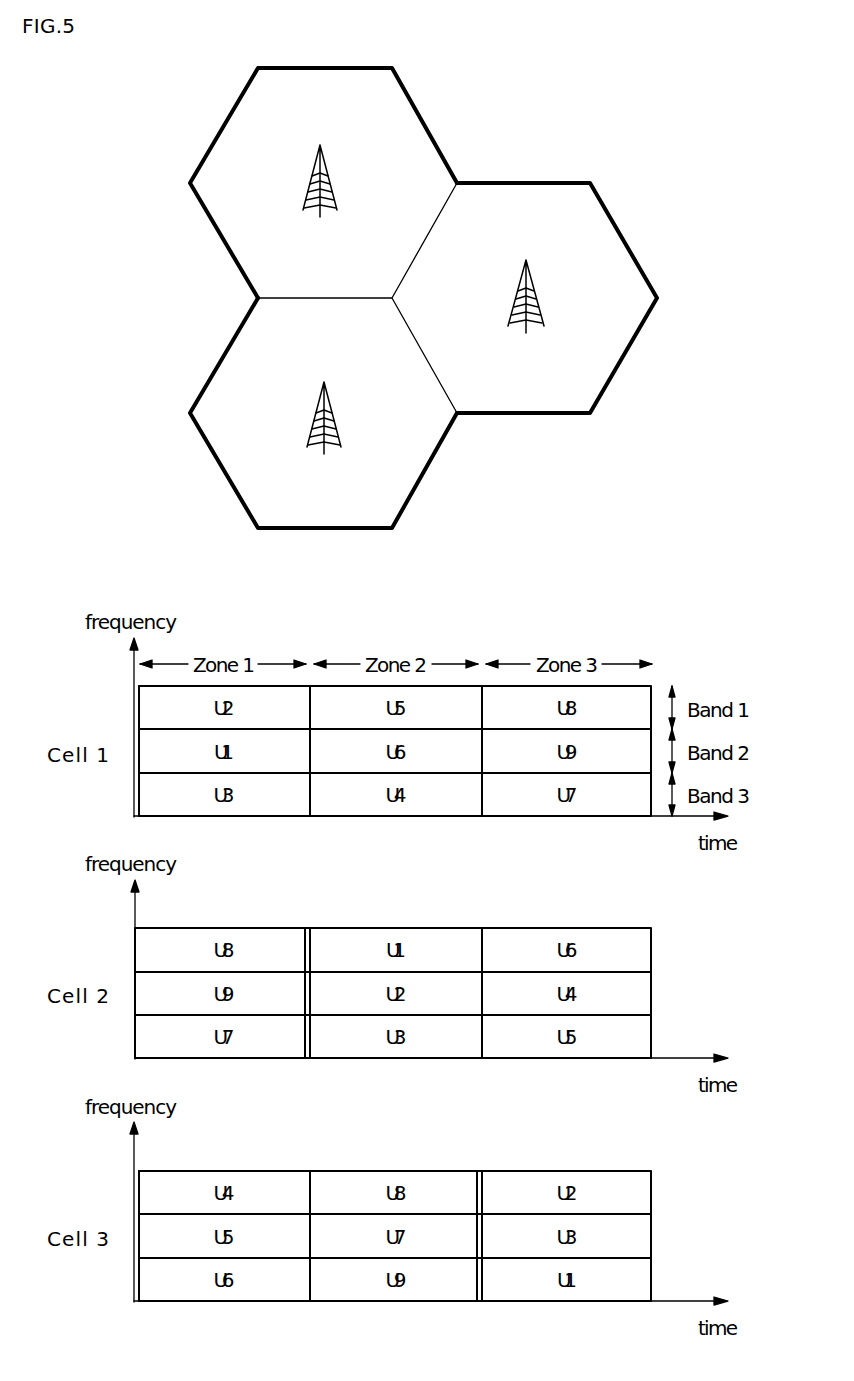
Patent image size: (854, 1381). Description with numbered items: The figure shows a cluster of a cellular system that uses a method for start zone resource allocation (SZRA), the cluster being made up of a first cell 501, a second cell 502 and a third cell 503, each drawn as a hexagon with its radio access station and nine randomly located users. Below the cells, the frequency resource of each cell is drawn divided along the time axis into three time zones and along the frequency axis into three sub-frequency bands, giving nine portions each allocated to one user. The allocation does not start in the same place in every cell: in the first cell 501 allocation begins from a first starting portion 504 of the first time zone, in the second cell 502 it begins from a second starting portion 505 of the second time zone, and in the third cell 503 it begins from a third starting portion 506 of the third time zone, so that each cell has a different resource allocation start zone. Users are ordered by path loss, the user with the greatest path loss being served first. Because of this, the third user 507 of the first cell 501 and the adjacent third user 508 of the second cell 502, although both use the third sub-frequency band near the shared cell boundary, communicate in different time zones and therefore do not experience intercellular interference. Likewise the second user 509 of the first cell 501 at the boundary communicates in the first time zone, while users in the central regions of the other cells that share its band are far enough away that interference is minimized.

The first cell 501 is at (205, 443).
The second cell 502 is at (407, 88).
The third cell 503 is at (600, 407).
The first starting portion 504 is at (308, 927).
The second starting portion 505 is at (478, 1170).
The third starting portion 506 is at (355, 320).
The third user of the first cell 507 is at (358, 280).
The third user of the second cell 508 is at (425, 408).
The second user of the first cell 509 is at (442, 362).